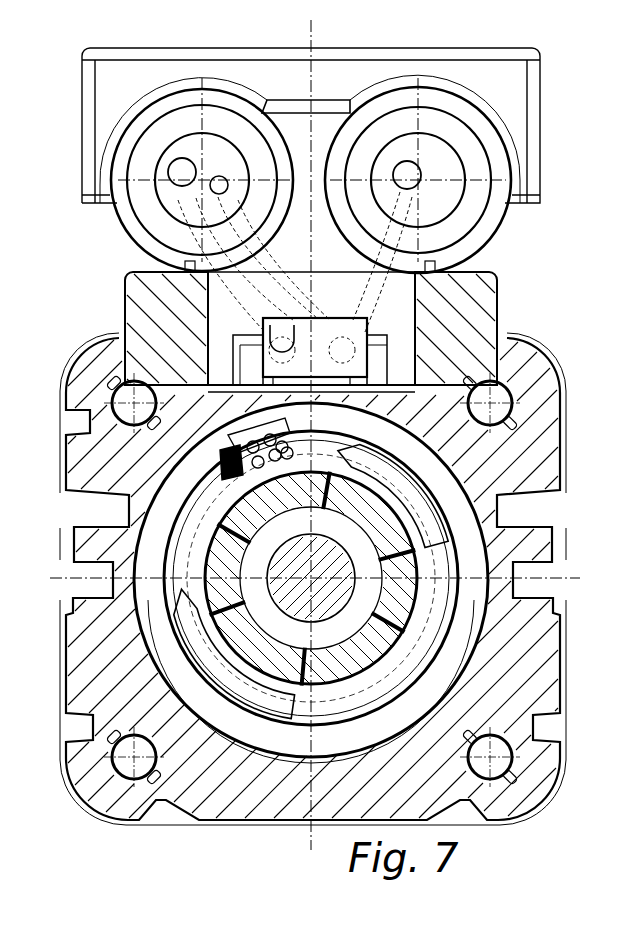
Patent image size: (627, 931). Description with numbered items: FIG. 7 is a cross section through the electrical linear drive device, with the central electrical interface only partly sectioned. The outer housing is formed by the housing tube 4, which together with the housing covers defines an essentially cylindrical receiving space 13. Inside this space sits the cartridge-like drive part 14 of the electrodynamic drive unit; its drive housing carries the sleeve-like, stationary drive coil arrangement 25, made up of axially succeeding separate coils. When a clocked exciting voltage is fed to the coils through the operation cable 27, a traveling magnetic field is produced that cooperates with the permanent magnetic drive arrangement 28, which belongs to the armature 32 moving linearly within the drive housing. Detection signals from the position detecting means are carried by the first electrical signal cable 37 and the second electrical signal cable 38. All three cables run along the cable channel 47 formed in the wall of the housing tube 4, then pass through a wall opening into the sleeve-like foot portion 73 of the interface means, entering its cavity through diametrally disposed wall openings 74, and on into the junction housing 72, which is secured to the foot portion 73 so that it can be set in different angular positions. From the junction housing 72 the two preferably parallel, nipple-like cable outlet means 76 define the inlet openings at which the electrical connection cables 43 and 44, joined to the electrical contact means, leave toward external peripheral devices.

The housing tube 4 is at (527, 477).
The receiving space 13 is at (523, 443).
The drive part 14 is at (472, 523).
The drive coil arrangement 25 is at (196, 620).
The operation cable 27 is at (433, 233).
The permanent magnetic drive arrangement 28 is at (408, 612).
The armature 32 is at (102, 84).
The first electrical signal cable 37 is at (187, 204).
The second electrical signal cable 38 is at (288, 118).
The electrical connection cable 43 is at (182, 148).
The electrical connection cable 44 is at (450, 160).
The cable channel 47 is at (393, 365).
The junction housing 72 is at (114, 136).
The foot portion 73 is at (483, 298).
The wall openings of the foot portion 74 is at (267, 328).
The cable outlet means 76 is at (218, 158).